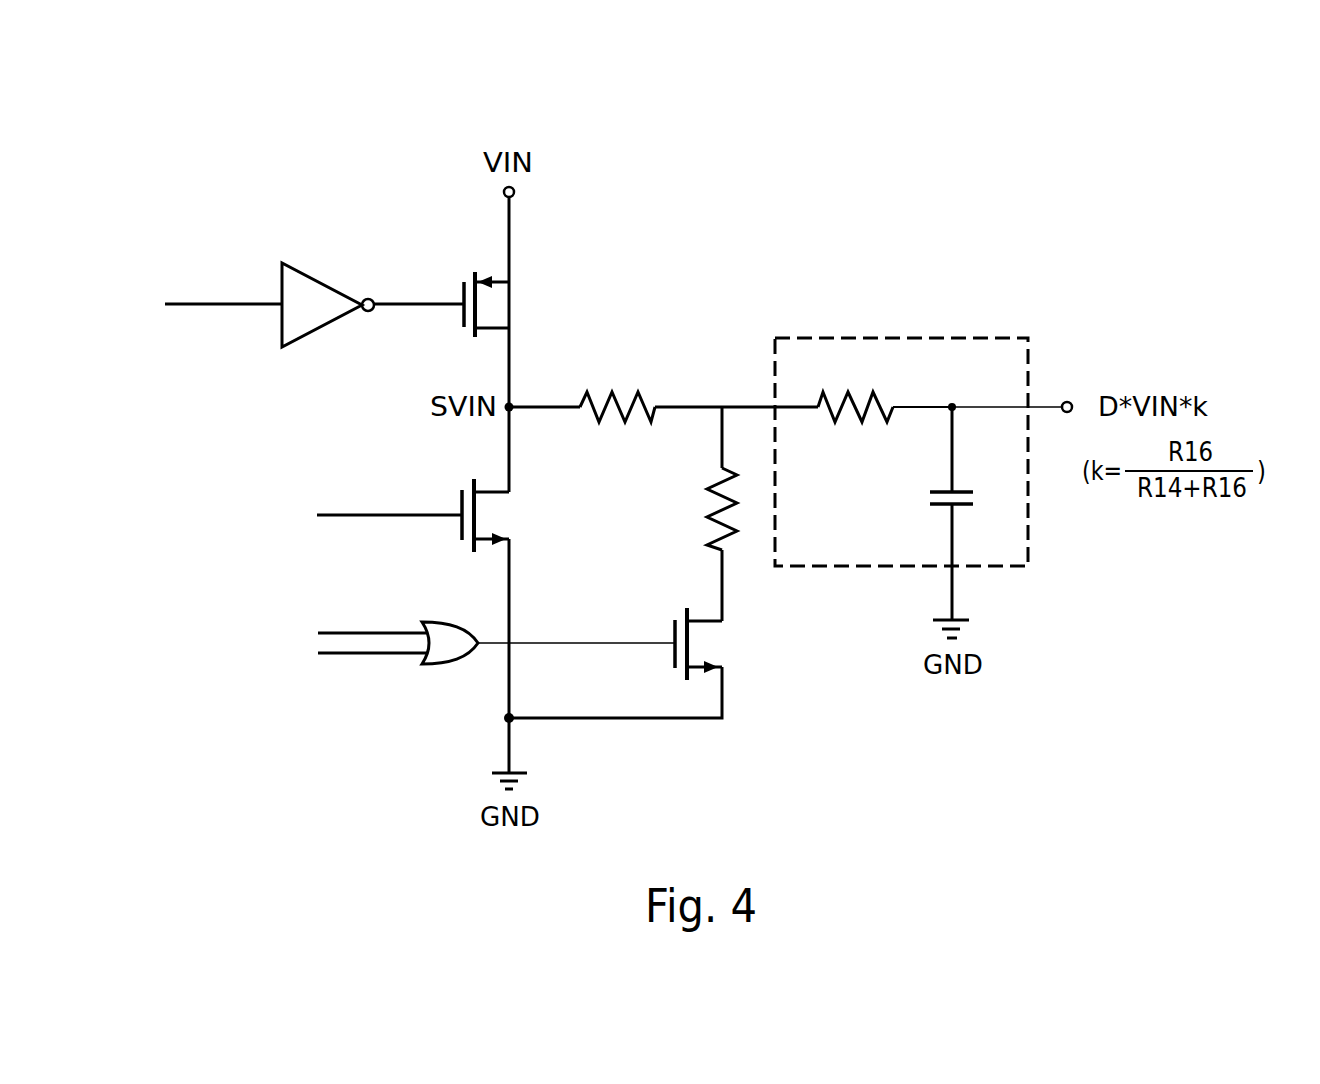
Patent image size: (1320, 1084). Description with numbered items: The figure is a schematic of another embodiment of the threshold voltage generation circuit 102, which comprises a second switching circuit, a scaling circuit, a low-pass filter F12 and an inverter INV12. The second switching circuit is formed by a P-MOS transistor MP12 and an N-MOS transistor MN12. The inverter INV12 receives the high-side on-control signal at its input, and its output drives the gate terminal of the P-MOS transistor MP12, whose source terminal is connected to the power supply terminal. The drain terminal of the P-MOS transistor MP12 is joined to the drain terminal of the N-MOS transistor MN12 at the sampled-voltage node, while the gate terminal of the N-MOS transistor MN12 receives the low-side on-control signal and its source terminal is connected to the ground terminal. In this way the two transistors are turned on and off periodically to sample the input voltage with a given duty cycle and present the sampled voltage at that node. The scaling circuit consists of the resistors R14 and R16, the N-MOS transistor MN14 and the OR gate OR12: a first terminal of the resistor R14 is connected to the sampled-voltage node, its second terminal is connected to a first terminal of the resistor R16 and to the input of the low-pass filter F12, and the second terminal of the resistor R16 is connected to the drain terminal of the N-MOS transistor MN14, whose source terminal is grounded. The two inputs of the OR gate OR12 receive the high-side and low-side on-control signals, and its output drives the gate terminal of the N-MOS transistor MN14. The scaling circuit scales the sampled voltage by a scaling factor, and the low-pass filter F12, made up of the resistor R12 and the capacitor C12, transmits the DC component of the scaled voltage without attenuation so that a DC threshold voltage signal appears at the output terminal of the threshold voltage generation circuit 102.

The threshold voltage generation circuit 102 is at (260, 131).
The inverter INV12 is at (282, 346).
The P-MOS transistor MP12 is at (468, 339).
The N-MOS transistor MN12 is at (442, 590).
The N-MOS transistor MN14 is at (644, 663).
The OR gate OR12 is at (438, 665).
The resistor R14 is at (617, 387).
The resistor R16 is at (690, 514).
The resistor R12 is at (855, 390).
The capacitor C12 is at (922, 513).
The low-pass filter F12 is at (893, 338).